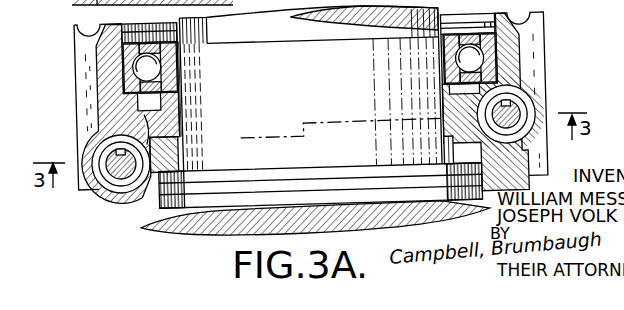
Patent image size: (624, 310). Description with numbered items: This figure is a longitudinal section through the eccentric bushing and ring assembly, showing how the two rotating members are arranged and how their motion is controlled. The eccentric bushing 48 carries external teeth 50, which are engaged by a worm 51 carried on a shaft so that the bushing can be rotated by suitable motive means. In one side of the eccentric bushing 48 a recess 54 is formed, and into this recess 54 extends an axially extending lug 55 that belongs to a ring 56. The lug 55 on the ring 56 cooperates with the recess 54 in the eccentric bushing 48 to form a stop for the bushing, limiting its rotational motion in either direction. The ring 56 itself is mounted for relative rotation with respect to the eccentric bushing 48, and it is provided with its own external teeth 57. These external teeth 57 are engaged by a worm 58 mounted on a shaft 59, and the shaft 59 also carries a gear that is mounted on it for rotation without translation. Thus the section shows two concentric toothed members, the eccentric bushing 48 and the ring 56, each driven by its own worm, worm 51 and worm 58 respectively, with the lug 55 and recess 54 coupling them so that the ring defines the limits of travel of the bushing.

The eccentric bushing 48 is at (463, 90).
The external teeth 50 is at (480, 113).
The worm 51 is at (530, 107).
The recess 54 is at (179, 135).
The lug 55 is at (190, 135).
The ring 56 is at (166, 163).
The external teeth 57 is at (447, 150).
The worm 58 is at (102, 157).
The shaft 59 is at (118, 170).